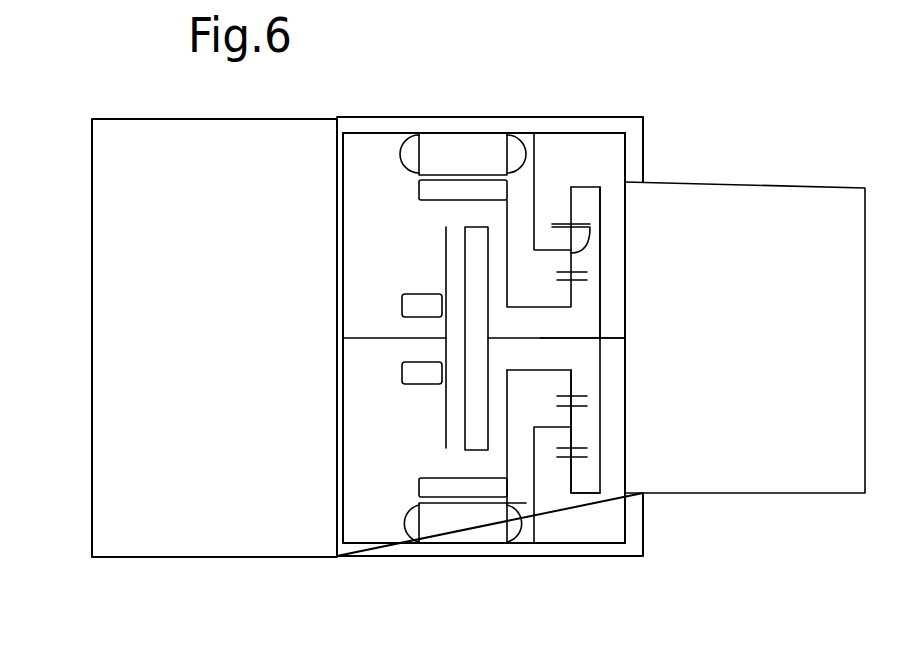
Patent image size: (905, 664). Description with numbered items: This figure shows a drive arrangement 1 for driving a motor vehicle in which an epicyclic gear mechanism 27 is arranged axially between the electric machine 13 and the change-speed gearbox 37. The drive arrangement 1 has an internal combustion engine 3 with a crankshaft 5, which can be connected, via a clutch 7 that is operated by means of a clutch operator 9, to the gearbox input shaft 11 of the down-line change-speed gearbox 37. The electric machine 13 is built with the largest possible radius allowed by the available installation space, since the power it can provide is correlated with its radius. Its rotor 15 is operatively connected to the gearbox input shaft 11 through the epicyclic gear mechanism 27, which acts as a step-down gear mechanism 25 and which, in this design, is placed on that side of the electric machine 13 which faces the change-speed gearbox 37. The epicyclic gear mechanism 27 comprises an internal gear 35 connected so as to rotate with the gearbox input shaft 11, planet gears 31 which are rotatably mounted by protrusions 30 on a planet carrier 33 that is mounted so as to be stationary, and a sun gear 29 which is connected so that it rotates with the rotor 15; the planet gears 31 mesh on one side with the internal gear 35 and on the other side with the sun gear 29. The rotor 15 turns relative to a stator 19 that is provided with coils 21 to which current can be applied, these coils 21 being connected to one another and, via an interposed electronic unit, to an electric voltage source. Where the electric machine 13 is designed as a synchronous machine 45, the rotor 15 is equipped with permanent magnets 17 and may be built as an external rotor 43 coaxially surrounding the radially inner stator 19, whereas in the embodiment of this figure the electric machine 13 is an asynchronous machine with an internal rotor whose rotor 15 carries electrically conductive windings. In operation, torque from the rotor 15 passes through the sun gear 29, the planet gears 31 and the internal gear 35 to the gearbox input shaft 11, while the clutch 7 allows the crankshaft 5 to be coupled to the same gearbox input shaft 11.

The drive arrangement 1 is at (83, 85).
The internal combustion engine 3 is at (122, 538).
The crankshaft 5 is at (362, 340).
The clutch 7 is at (474, 452).
The clutch operator 9 is at (412, 373).
The gearbox input shaft 11 is at (612, 342).
The electric machine 13 is at (521, 531).
The rotor 15 is at (468, 490).
The permanent magnets 17 is at (482, 190).
The stator 19 is at (407, 545).
The coils 21 is at (405, 527).
The step-down gear mechanism 25 is at (601, 174).
The epicyclic gear mechanism 27 is at (587, 502).
The sun gear 29 is at (572, 298).
The protrusions 30 is at (548, 247).
The planet gears 31 is at (572, 188).
The planet carrier 33 is at (556, 240).
The internal gear 35 is at (592, 172).
The change-speed gearbox 37 is at (782, 467).
The external rotor 43 is at (402, 167).
The synchronous machine 45 is at (517, 515).